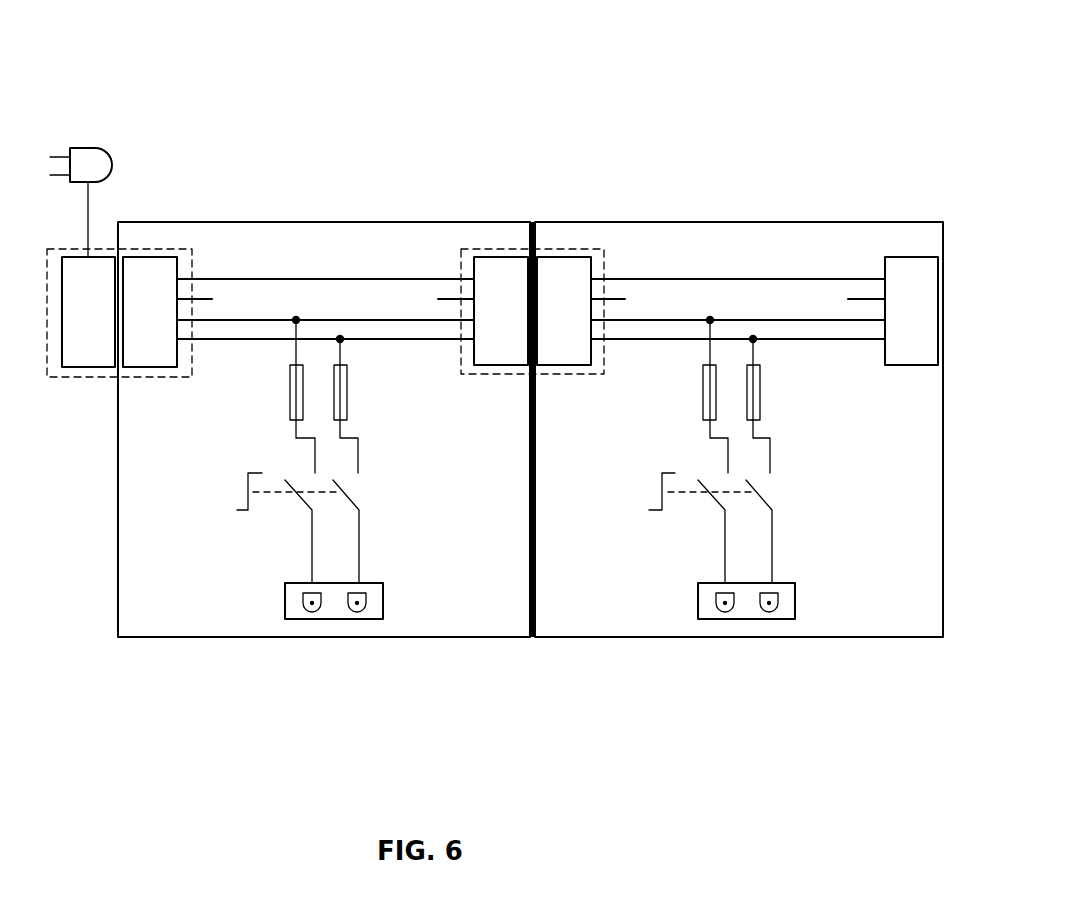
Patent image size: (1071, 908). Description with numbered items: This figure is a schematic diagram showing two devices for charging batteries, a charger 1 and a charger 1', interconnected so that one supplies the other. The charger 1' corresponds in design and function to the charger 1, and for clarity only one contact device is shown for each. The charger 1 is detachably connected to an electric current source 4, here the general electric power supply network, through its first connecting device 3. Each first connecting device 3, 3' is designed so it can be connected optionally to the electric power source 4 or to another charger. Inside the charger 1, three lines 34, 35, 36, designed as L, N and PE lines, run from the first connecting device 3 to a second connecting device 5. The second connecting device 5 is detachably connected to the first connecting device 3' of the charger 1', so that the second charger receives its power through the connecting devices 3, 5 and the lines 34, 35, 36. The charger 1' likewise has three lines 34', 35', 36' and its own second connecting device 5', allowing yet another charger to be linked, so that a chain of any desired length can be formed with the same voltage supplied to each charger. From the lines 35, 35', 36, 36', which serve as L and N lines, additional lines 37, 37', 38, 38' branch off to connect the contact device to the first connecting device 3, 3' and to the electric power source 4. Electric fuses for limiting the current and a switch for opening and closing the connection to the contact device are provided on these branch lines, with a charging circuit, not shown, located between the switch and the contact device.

The charger 1 is at (324, 351).
The charger 1' is at (736, 348).
The first connecting device 3 is at (119, 256).
The first connecting device 3' is at (571, 250).
The electric current source 4 is at (87, 128).
The second connecting device 5 is at (530, 255).
The second connecting device 5' is at (899, 249).
The line 34 is at (325, 267).
The line 34' is at (738, 267).
The line 35 is at (325, 301).
The line 35' is at (738, 301).
The line 36 is at (333, 384).
The line 36' is at (755, 383).
The line 37 is at (268, 395).
The line 37' is at (681, 395).
The line 38 is at (383, 405).
The line 38' is at (799, 405).